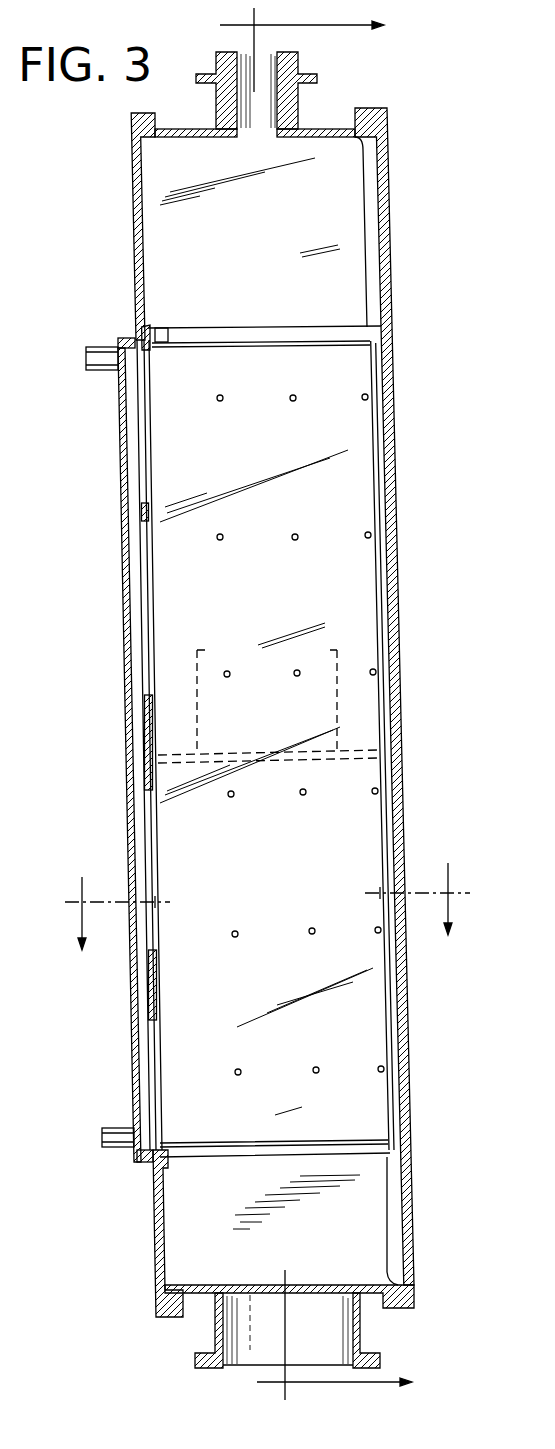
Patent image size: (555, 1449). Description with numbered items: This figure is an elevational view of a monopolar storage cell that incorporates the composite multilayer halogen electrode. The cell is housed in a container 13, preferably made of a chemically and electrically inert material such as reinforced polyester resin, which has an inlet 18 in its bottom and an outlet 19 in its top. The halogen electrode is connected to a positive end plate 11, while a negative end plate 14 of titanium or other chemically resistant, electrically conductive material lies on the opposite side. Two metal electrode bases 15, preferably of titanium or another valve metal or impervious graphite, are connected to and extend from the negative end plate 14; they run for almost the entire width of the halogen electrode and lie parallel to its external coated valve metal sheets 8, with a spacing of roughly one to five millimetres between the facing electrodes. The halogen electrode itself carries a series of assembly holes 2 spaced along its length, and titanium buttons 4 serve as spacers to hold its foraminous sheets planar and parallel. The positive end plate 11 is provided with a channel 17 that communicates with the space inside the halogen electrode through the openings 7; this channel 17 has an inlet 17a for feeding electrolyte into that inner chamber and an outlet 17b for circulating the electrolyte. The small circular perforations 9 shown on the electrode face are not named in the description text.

The assembly holes 2 is at (267, 923).
The titanium buttons 4 is at (328, 704).
The openings 7 is at (140, 428).
The external coated valve metal sheets 8 is at (355, 456).
The perforations 9 is at (223, 400).
The positive end plate 11 is at (133, 200).
The container 13 is at (324, 120).
The negative end plate 14 is at (388, 200).
The metal electrode bases 15 is at (260, 327).
The channel 17 is at (130, 656).
The inlet 17a is at (115, 1136).
The outlet 17b is at (100, 353).
The inlet 18 is at (255, 1335).
The outlet 19 is at (250, 106).